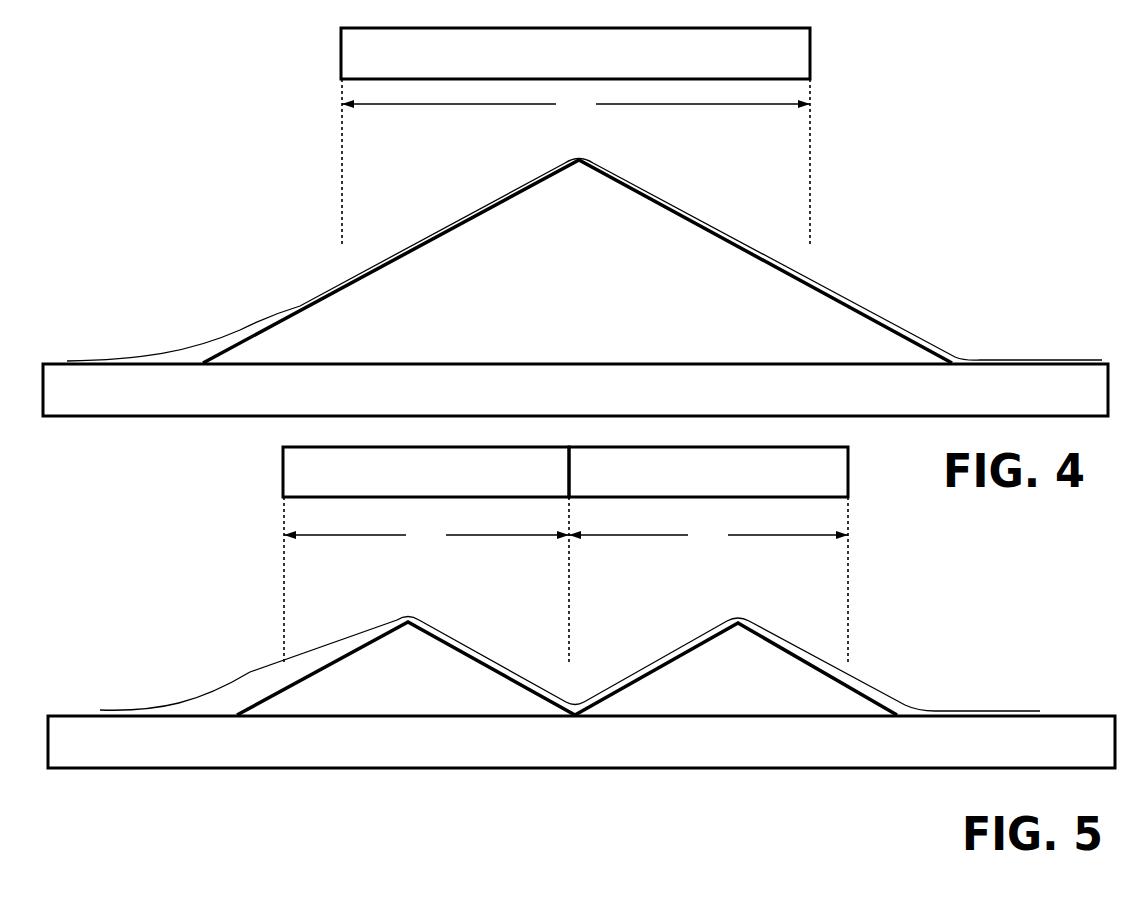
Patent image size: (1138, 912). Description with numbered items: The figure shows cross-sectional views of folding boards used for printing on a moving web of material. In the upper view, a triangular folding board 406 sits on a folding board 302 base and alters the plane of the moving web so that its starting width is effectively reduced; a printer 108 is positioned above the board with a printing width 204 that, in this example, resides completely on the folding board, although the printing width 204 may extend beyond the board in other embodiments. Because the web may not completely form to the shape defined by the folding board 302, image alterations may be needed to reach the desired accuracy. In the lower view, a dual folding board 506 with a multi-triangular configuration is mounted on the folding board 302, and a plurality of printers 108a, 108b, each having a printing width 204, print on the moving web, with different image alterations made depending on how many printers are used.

In FIG. 4, the printer 108 is at (812, 57).
In FIG. 5, the printer 108a is at (283, 474).
In FIG. 5, the printer 108b is at (850, 475).
In FIG. 4, the printing width 204 is at (576, 162).
In FIG. 5, the printing width 204 is at (566, 580).
In FIG. 4, the folding board 302 is at (776, 348).
In FIG. 5, the folding board 302 is at (802, 719).
In FIG. 4, the folding board 406 is at (122, 258).
In FIG. 5, the dual folding board 506 is at (133, 630).